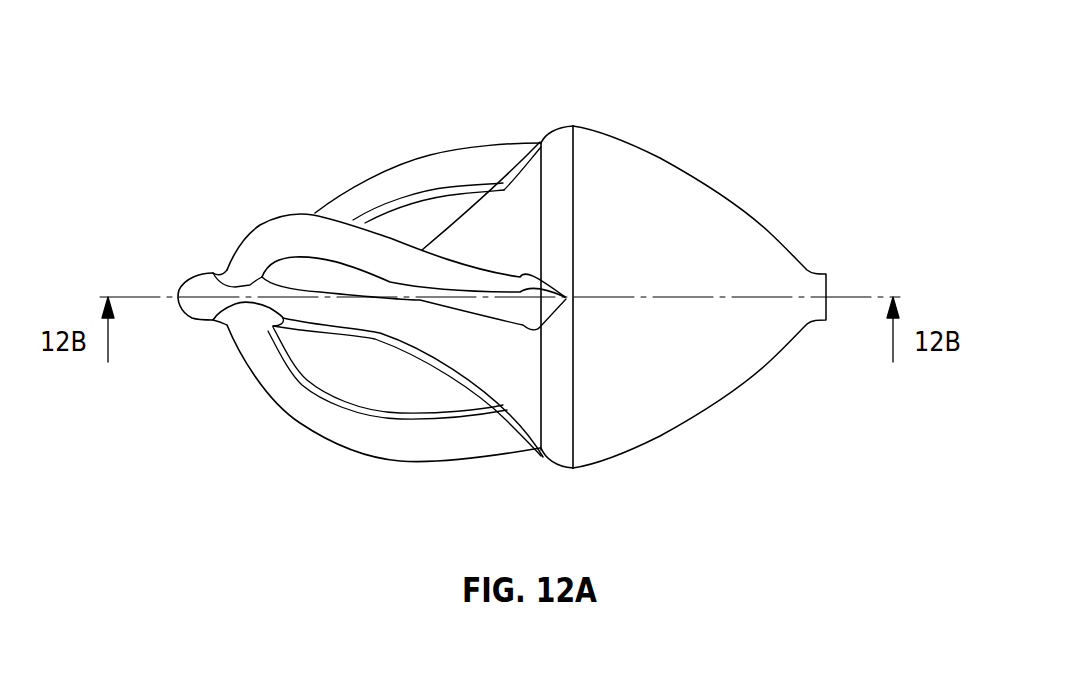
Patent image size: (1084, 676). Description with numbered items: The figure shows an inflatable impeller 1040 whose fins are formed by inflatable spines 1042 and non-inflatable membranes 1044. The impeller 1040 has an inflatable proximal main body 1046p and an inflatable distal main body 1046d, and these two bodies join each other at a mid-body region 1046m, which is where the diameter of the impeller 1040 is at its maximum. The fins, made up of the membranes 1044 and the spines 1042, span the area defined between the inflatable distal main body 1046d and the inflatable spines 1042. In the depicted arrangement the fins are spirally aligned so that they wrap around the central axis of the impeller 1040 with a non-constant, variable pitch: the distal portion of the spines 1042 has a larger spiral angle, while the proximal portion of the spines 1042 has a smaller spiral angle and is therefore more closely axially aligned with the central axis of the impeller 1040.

The impeller 1040 is at (792, 141).
The inflatable spines 1042 is at (297, 235).
The non-inflatable membranes 1044 is at (395, 368).
The inflatable distal main body 1046d is at (508, 220).
The mid-body region 1046m is at (563, 469).
The inflatable proximal main body 1046p is at (653, 362).